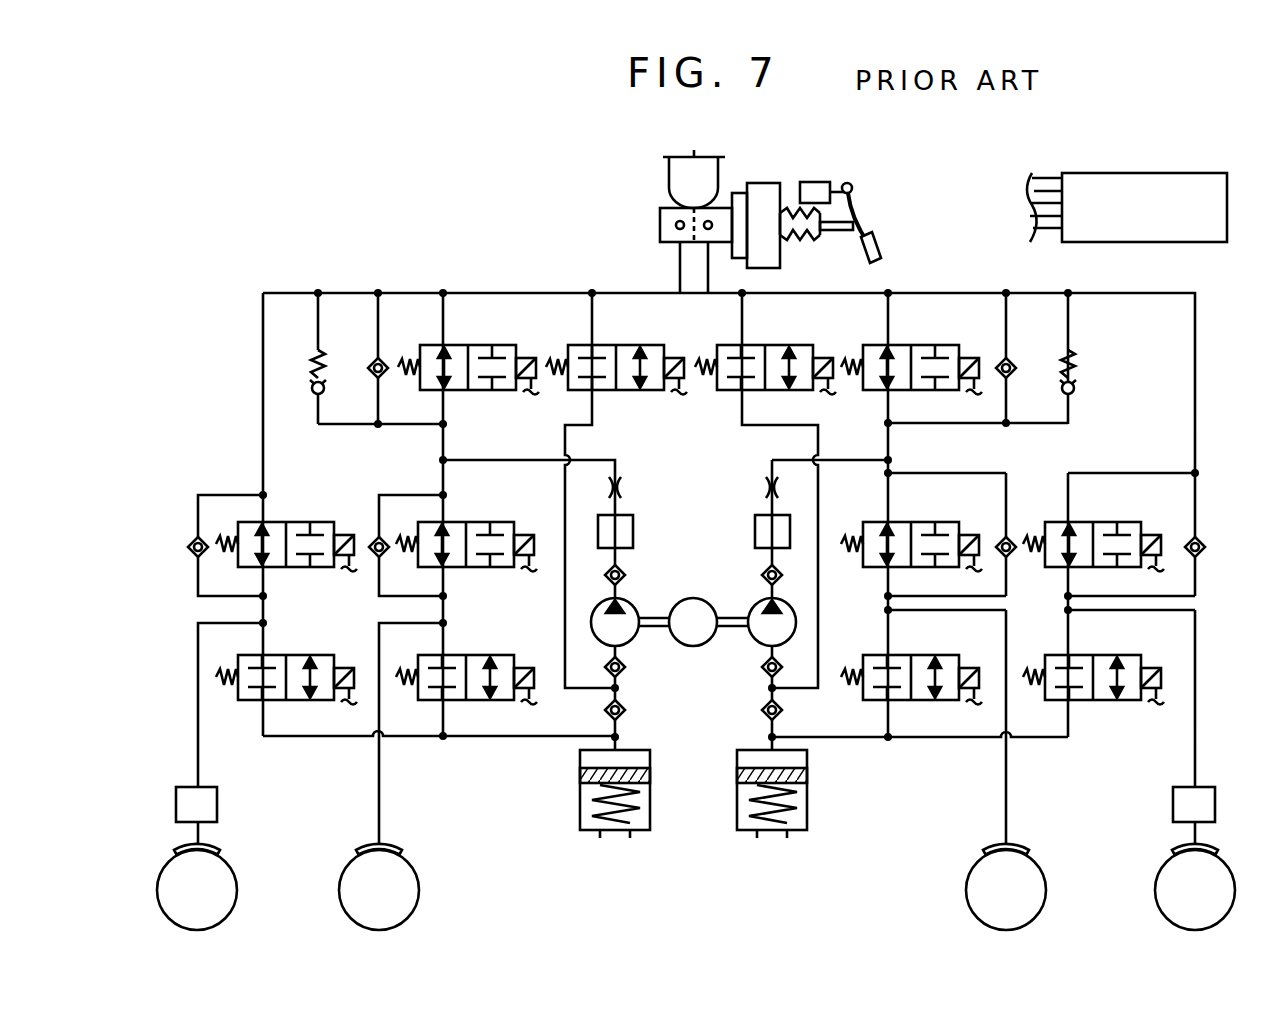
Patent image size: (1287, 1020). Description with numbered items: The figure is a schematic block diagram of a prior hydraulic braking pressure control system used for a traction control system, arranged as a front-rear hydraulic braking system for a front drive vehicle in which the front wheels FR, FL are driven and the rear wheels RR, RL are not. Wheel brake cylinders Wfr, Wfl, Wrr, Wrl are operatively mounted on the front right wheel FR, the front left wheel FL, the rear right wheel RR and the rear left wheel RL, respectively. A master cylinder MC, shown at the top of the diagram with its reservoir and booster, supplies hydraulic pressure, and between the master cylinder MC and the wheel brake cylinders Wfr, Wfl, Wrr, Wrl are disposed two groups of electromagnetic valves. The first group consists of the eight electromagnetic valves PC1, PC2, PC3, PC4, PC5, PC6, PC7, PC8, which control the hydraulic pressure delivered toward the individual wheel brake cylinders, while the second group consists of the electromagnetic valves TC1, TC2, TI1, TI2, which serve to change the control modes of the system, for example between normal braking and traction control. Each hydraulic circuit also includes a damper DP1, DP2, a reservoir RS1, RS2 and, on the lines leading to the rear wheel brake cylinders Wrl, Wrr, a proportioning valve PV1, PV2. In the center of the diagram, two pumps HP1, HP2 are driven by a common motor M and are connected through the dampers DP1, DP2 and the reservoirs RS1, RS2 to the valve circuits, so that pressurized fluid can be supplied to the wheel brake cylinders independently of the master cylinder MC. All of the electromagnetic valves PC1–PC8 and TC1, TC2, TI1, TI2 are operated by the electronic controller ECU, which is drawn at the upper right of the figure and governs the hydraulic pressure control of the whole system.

The master cylinder MC is at (660, 222).
The electronic controller ECU is at (1127, 207).
The electromagnetic valve TC1 is at (468, 345).
The electromagnetic valve TC2 is at (911, 345).
The electromagnetic valve TI1 is at (616, 345).
The electromagnetic valve TI2 is at (765, 345).
The electromagnetic valve PC1 is at (286, 522).
The electromagnetic valve PC2 is at (466, 522).
The electromagnetic valve PC3 is at (911, 522).
The electromagnetic valve PC4 is at (1093, 522).
The electromagnetic valve PC5 is at (286, 655).
The electromagnetic valve PC6 is at (466, 655).
The electromagnetic valve PC7 is at (911, 655).
The electromagnetic valve PC8 is at (1093, 655).
The damper DP1 is at (633, 532).
The damper DP2 is at (755, 532).
The hydraulic pump 1 HP1 is at (636, 610).
The hydraulic pump 2 HP2 is at (752, 610).
The motor M is at (693, 622).
The reservoir RS1 is at (580, 776).
The reservoir RS2 is at (807, 776).
The proportioning valve PV1 is at (176, 802).
The proportioning valve PV2 is at (1173, 805).
The wheel brake cylinder Wrl is at (178, 849).
The wheel brake cylinder Wfr is at (360, 849).
The wheel brake cylinder Wfl is at (1024, 851).
The wheel brake cylinder Wrr is at (1212, 851).
The rear wheel RL is at (196, 891).
The front wheel FR is at (377, 891).
The front wheel FL is at (1005, 891).
The rear wheel RR is at (1193, 891).